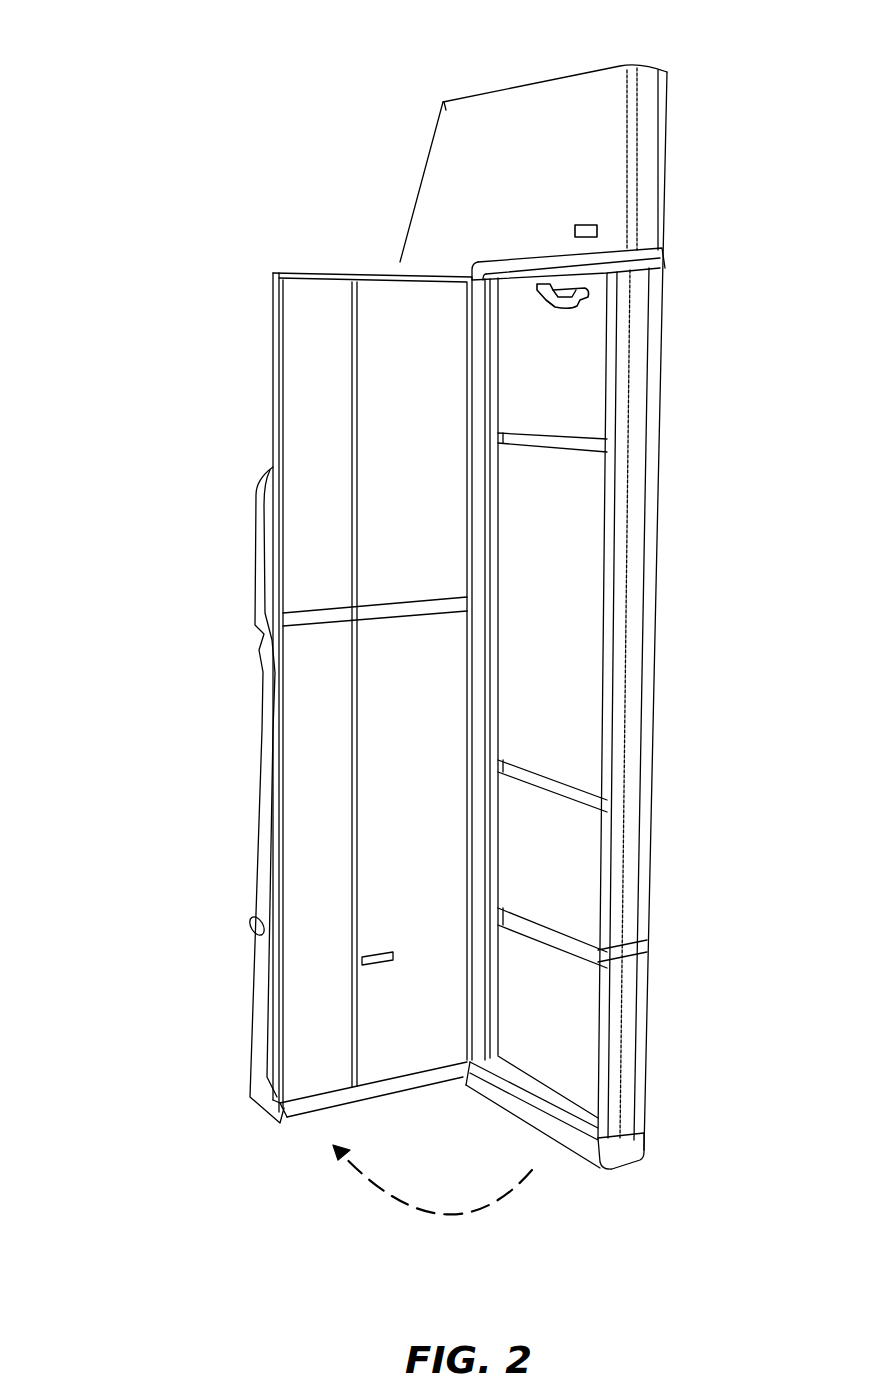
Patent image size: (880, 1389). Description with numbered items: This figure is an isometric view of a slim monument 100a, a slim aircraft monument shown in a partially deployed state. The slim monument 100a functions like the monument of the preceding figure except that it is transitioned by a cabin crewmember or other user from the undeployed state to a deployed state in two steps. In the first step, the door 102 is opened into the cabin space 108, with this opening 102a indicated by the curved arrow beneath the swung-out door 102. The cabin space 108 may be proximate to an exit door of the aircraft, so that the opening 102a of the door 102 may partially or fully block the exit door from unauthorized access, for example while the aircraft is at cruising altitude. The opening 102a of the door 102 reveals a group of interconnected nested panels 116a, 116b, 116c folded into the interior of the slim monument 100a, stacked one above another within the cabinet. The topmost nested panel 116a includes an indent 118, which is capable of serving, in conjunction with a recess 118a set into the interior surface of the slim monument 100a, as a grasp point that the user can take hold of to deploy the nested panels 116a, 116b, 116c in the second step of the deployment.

The slim monument 100a is at (112, 68).
The door 102 is at (328, 282).
The opening 102a is at (462, 1213).
The cabin space 108 is at (175, 940).
The topmost nested panel 116a is at (585, 412).
The nested panel 116b is at (585, 683).
The nested panel 116c is at (585, 895).
The indent 118 is at (540, 299).
The recess 118a is at (563, 297).